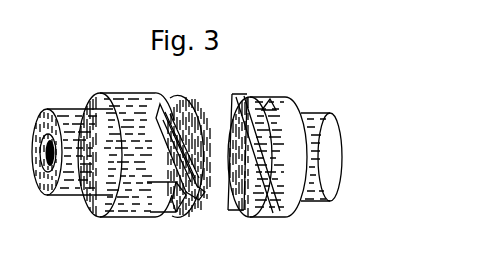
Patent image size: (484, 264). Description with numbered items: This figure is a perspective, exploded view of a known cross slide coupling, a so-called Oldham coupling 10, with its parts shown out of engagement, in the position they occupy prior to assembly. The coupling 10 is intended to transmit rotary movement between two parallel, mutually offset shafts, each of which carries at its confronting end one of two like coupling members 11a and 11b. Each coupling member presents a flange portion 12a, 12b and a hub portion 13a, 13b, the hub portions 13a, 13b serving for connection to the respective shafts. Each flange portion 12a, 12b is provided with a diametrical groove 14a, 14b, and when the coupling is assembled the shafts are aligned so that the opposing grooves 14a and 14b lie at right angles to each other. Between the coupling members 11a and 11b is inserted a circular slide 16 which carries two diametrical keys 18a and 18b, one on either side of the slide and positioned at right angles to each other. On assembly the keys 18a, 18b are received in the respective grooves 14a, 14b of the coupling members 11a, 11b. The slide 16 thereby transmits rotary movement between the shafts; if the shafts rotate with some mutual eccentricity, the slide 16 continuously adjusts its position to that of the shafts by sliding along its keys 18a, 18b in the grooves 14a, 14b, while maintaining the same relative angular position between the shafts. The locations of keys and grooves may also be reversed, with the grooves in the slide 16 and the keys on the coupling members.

The coupling 10 is at (352, 101).
The coupling member 11a is at (76, 101).
The coupling member 11b is at (300, 102).
The flange portion 12a is at (133, 208).
The flange portion 12b is at (270, 208).
The hub portion 13a is at (80, 191).
The hub portion 13b is at (325, 176).
The groove 14a is at (169, 206).
The groove 14b is at (245, 100).
The circular slide 16 is at (201, 100).
The key 18a is at (203, 198).
The key 18b is at (220, 103).